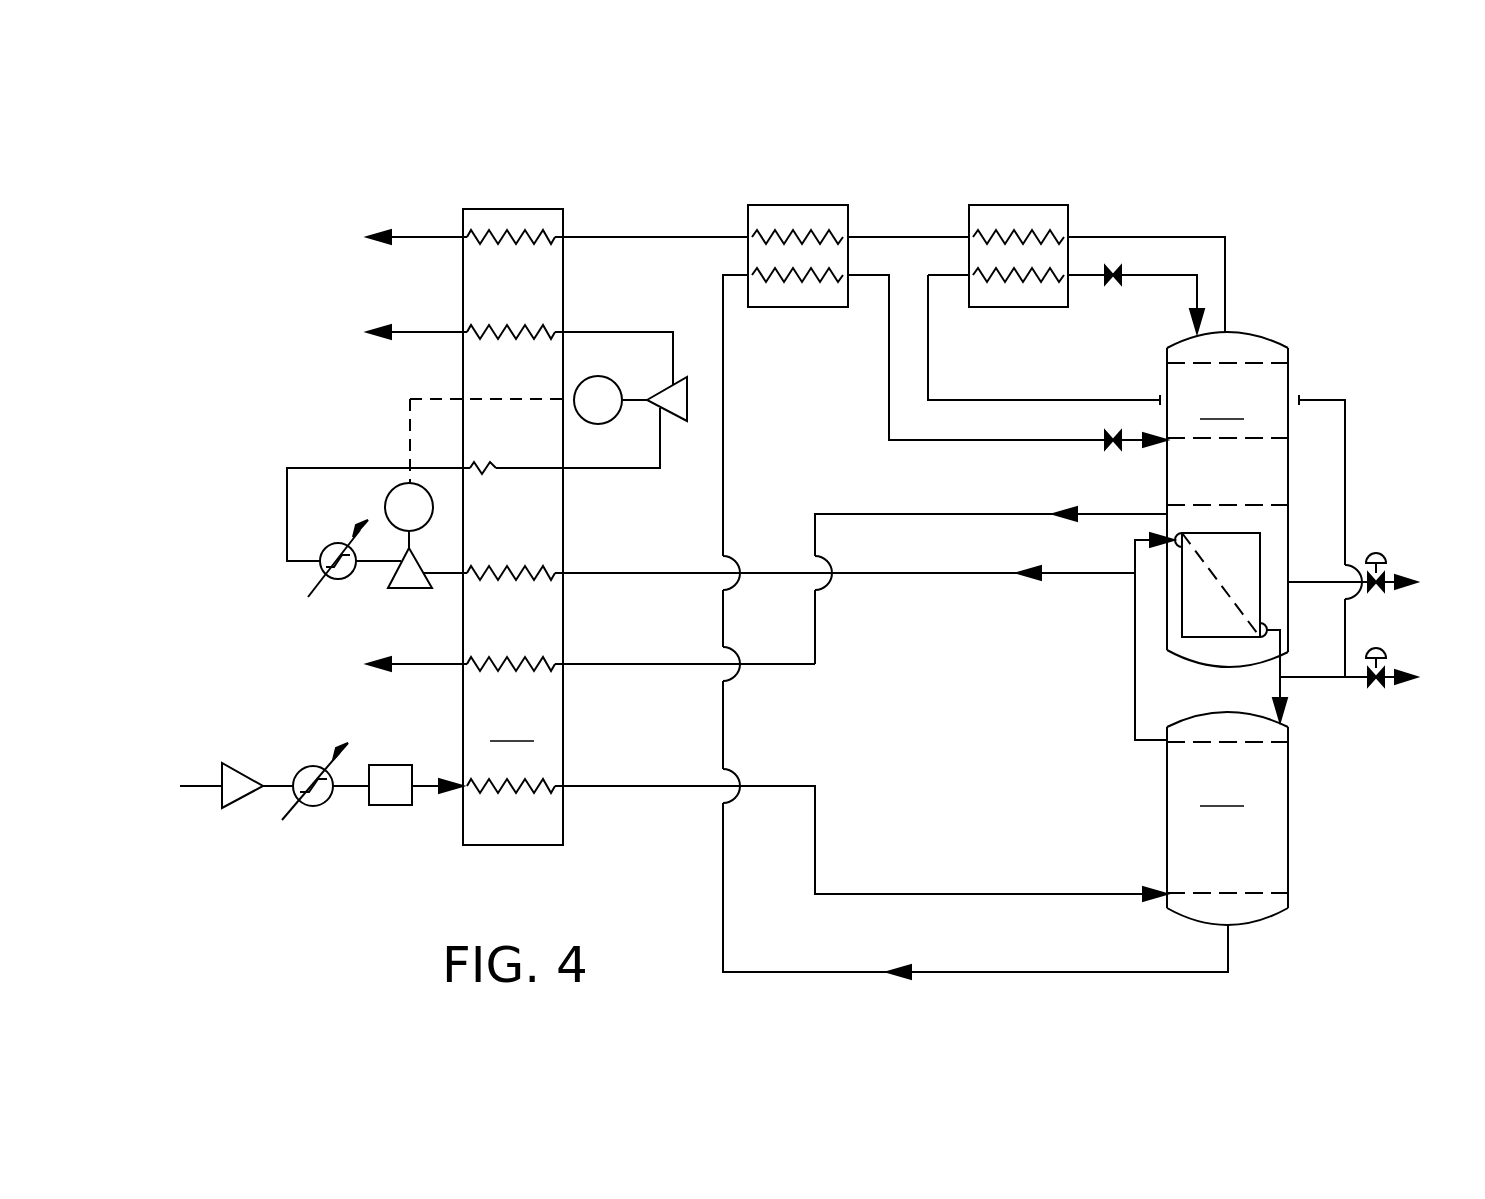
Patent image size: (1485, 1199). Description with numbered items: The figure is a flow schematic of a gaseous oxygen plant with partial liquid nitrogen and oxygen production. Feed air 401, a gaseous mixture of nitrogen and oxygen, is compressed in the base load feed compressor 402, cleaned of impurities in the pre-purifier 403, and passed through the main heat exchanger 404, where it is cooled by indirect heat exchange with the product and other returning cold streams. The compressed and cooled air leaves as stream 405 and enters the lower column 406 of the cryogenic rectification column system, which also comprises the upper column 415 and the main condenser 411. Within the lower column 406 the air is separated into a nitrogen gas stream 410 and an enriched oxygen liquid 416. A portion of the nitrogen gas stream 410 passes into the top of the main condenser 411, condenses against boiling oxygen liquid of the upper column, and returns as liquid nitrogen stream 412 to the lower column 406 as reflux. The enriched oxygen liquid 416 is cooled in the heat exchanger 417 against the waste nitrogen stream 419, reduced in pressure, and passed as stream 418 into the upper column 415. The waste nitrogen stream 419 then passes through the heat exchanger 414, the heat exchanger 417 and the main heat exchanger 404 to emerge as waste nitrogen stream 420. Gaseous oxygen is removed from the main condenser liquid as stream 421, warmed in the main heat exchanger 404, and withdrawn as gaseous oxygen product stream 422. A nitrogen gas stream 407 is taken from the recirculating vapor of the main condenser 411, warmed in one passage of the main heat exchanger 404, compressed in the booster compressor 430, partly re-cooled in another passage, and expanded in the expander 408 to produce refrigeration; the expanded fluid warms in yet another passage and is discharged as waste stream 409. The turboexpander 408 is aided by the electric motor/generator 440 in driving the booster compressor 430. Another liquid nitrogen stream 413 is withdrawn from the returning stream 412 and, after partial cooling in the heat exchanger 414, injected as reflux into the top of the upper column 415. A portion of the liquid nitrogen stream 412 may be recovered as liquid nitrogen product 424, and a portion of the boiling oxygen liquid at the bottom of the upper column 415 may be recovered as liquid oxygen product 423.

The feed air 401 is at (205, 787).
The base load feed compressor 402 is at (230, 763).
The pre-purifier 403 is at (390, 765).
The main heat exchanger 404 is at (513, 527).
The compressed and cooled feed air stream 405 is at (945, 893).
The lower column 406 is at (1227, 818).
The nitrogen gas stream 407 is at (848, 573).
The expander 408 is at (683, 421).
The waste stream 409 is at (447, 330).
The nitrogen gas stream 410 is at (1135, 642).
The main condenser 411 is at (1208, 627).
The liquid nitrogen stream 412 is at (1280, 678).
The liquid nitrogen stream 413 is at (1346, 500).
The heat exchanger 414 is at (985, 205).
The upper column 415 is at (1227, 499).
The enriched oxygen liquid 416 is at (1080, 972).
The heat exchanger 417 is at (764, 205).
The reduced-pressure enriched oxygen stream 418 is at (889, 400).
The waste nitrogen stream 419 is at (1110, 238).
The waste nitrogen stream 420 is at (466, 234).
The gaseous oxygen product stream 421 is at (838, 514).
The gaseous oxygen product stream 422 is at (447, 662).
The liquid oxygen product 423 is at (1381, 576).
The liquid nitrogen product 424 is at (1377, 671).
The booster compressor 430 is at (397, 588).
The electric motor/generator 440 is at (598, 375).